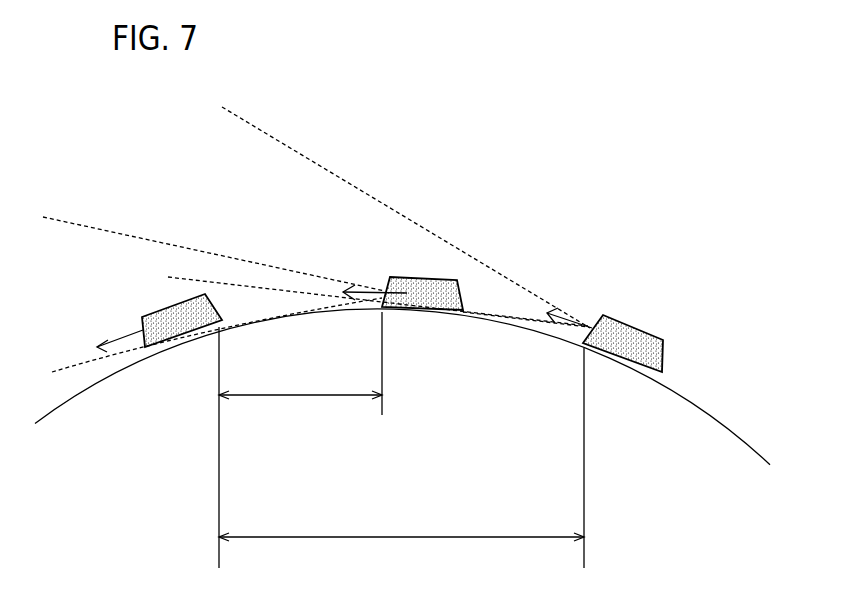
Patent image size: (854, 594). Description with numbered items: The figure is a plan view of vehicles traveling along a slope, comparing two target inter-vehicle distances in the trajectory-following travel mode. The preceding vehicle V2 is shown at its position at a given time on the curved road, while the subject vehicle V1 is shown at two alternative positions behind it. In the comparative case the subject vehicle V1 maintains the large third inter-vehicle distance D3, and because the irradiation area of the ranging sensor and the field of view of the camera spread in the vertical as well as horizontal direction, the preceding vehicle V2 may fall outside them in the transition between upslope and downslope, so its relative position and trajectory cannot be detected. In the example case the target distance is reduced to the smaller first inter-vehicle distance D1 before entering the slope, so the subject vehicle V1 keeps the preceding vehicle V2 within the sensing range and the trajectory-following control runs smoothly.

The subject vehicle V1 is at (680, 190).
The preceding vehicle V2 is at (167, 330).
The first inter-vehicle distance D1 is at (300, 425).
The third inter-vehicle distance D3 is at (401, 552).